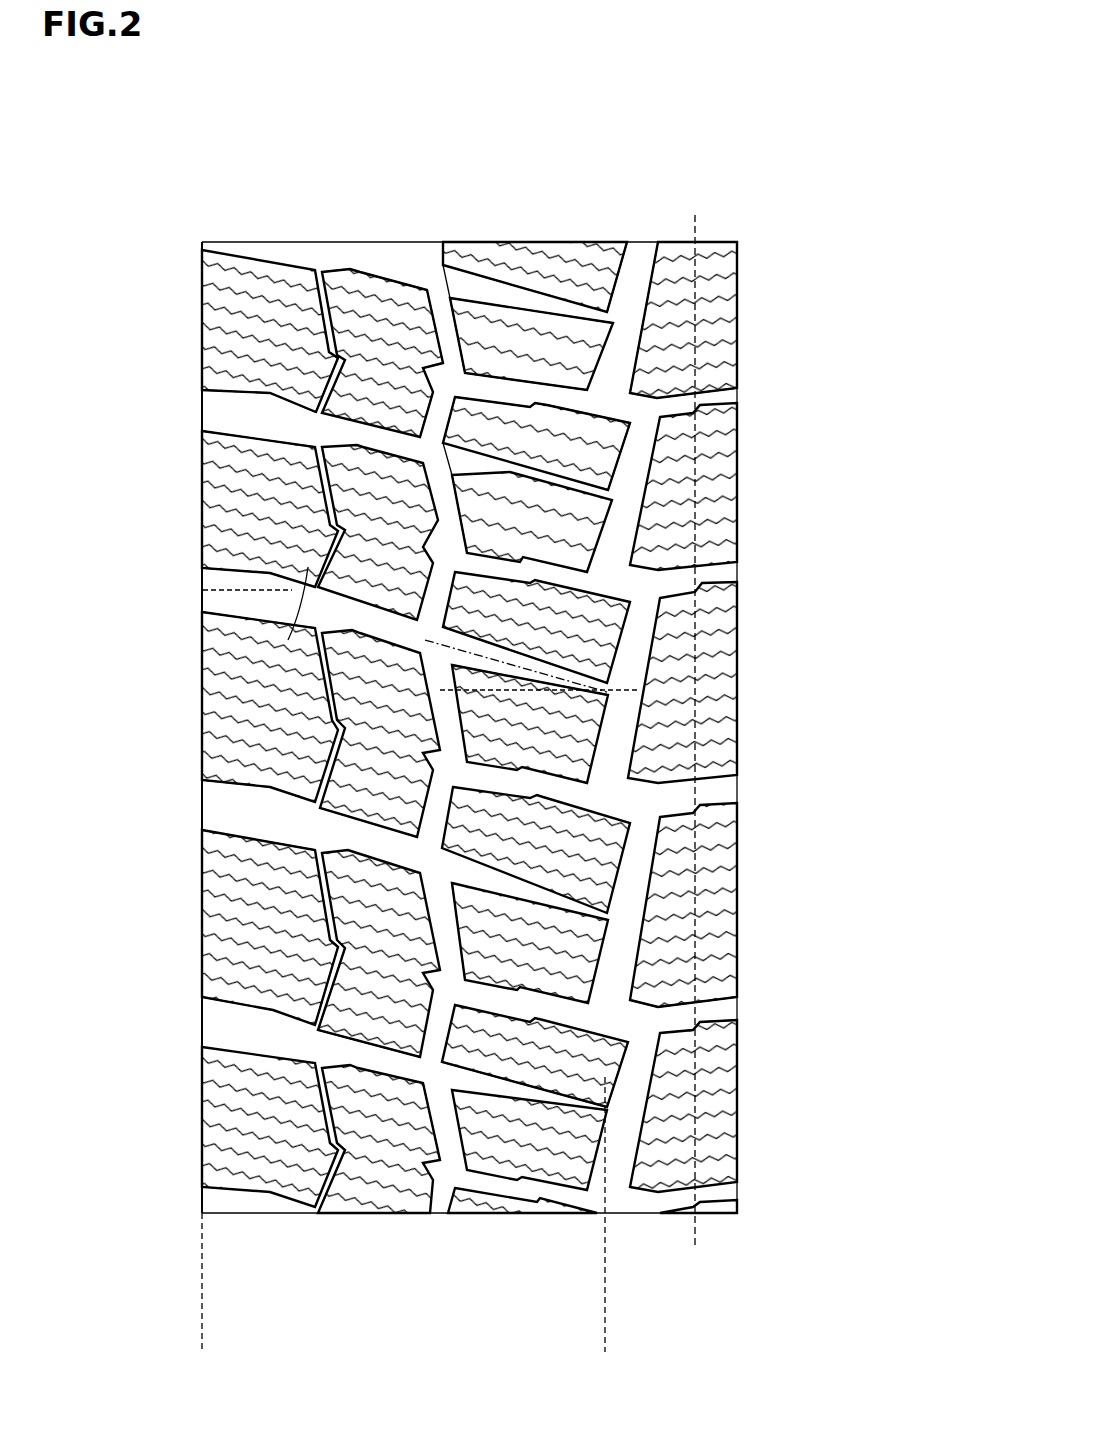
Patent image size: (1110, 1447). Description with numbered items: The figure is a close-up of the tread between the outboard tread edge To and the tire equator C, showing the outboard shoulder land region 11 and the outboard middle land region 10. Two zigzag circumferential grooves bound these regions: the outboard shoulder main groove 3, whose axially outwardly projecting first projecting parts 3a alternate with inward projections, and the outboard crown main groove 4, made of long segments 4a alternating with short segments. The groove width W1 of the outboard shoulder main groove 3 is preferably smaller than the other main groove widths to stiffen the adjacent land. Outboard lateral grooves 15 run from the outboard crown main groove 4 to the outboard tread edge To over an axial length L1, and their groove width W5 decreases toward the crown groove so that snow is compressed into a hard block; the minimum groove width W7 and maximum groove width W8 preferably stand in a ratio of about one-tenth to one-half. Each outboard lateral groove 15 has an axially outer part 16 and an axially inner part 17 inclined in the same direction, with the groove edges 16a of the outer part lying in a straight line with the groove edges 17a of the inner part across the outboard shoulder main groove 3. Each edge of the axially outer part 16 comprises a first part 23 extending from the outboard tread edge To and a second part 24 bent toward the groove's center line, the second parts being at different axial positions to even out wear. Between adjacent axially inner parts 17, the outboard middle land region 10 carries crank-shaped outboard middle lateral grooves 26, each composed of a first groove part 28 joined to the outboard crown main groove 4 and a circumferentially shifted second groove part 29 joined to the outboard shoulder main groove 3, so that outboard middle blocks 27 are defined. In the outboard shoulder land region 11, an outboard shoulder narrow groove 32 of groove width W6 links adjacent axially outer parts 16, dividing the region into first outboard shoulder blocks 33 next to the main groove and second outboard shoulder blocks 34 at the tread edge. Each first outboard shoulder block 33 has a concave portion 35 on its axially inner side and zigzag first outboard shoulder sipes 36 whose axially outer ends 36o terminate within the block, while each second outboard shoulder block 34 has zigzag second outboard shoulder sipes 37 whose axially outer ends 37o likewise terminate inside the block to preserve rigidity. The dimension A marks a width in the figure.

The outboard shoulder main groove 3 is at (438, 322).
The first projecting part 3a is at (440, 442).
The outboard crown main groove 4 is at (633, 296).
The long segment 4a is at (624, 495).
The outboard middle land region 10 is at (570, 262).
The outboard shoulder land region 11 is at (390, 138).
The outboard lateral groove 15 is at (108, 445).
The axially outer part 16 is at (302, 434).
The groove edge of axially outer part 16a is at (392, 1038).
The axially inner part 17 is at (545, 484).
The groove edge of axially inner part 17a is at (484, 1078).
The first part 23 is at (235, 790).
The second part 24 is at (270, 789).
The outboard middle lateral groove 26 is at (832, 292).
The outboard middle block 27 is at (542, 722).
The first groove part 28 is at (569, 400).
The second groove part 29 is at (497, 388).
The outboard shoulder narrow groove 32 is at (321, 362).
The first outboard shoulder block 33 is at (385, 332).
The second outboard shoulder block 34 is at (262, 306).
The concave portion 35 is at (445, 979).
The first outboard shoulder sipe 36 is at (373, 968).
The axially outer end of first outboard shoulder sipe 36o is at (335, 945).
The second outboard shoulder sipe 37 is at (257, 1113).
The axially outer end of second outboard shoulder sipe 37o is at (215, 1125).
The outboard tread edge To is at (200, 276).
The tire equator C is at (693, 713).
The groove width of outboard shoulder main groove W1 is at (474, 1126).
The groove width of outboard lateral groove W5 is at (235, 372).
The groove width of outboard shoulder narrow groove W6 is at (331, 348).
The minimum groove width of outboard lateral groove W7 is at (612, 1155).
The maximum groove width of outboard lateral groove W8 is at (178, 997).
The axial length of outboard lateral groove L1 is at (603, 1342).
The width A is at (437, 815).